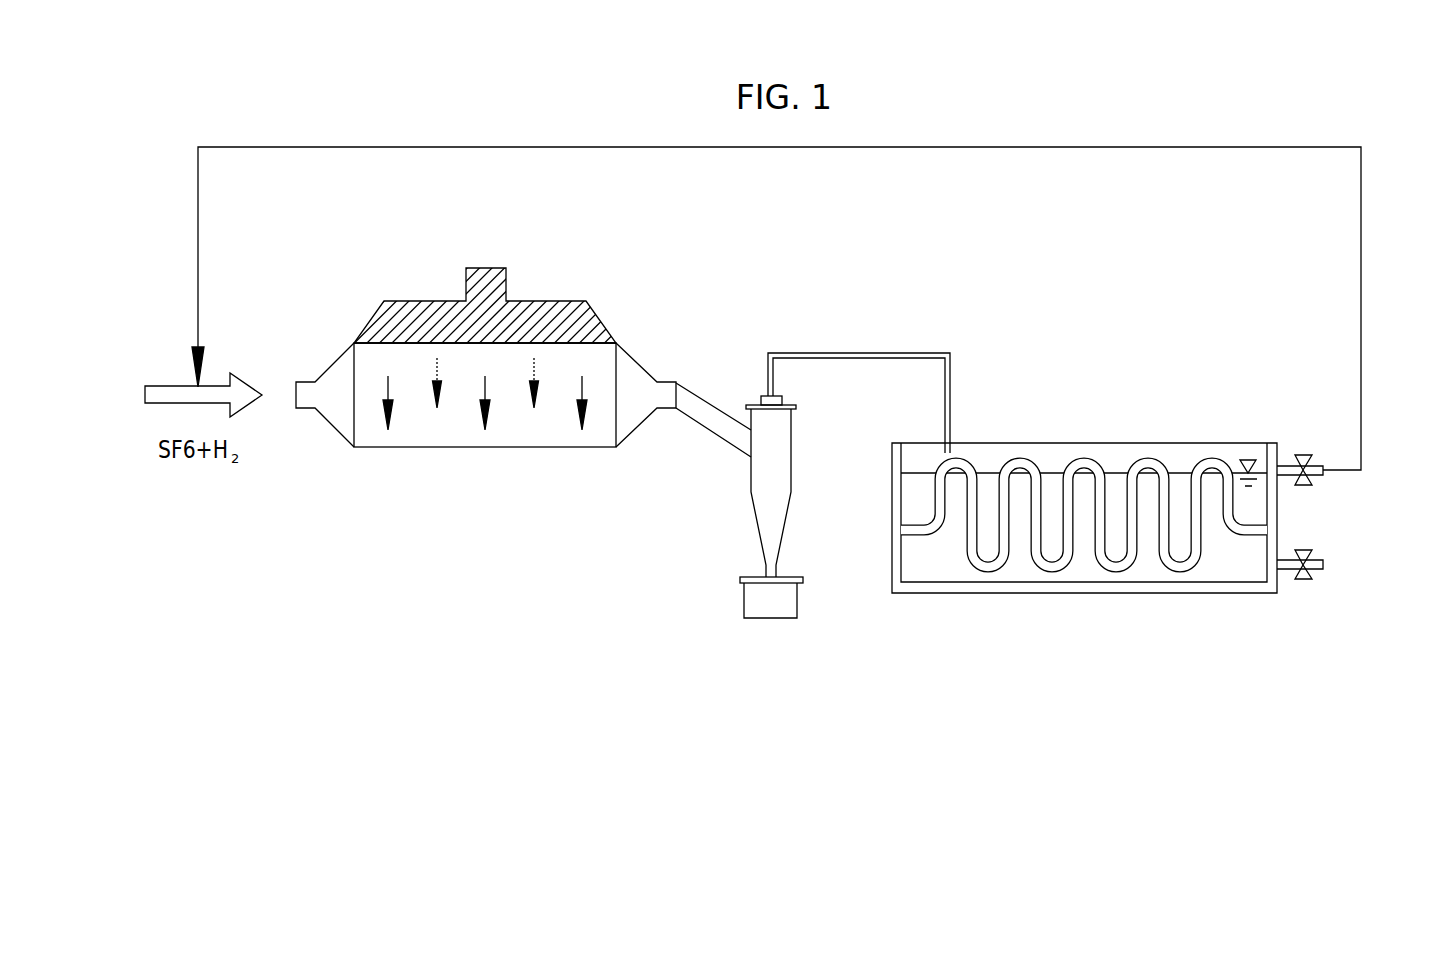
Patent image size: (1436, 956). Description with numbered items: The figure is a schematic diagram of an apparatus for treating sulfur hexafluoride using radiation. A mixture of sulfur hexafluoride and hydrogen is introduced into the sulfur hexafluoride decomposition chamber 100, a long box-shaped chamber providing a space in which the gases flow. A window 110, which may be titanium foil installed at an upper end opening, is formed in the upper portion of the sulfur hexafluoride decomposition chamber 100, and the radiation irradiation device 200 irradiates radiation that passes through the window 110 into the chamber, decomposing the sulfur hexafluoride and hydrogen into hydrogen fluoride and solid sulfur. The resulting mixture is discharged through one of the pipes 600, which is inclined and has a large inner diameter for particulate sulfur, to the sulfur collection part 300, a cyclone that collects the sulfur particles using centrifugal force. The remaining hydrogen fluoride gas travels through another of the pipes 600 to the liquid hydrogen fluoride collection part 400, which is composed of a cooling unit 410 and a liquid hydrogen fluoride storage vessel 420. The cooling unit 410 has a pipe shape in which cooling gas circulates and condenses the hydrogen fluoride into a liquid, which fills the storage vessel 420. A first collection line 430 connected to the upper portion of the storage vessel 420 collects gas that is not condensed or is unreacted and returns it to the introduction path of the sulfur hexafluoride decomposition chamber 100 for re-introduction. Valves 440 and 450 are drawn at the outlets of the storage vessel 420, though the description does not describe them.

The sulfur hexafluoride decomposition chamber 100 is at (454, 438).
The window 110 is at (428, 343).
The radiation irradiation device 200 is at (557, 307).
The sulfur collection part 300 is at (772, 505).
The liquid hydrogen fluoride collection part 400 is at (1172, 308).
The cooling unit 410 is at (1083, 467).
The liquid hydrogen fluoride storage vessel 420 is at (1150, 445).
The first collection line 430 is at (1360, 350).
The valve 440 is at (1318, 477).
The drain valve 450 is at (1318, 571).
The pipes 600 is at (857, 352).